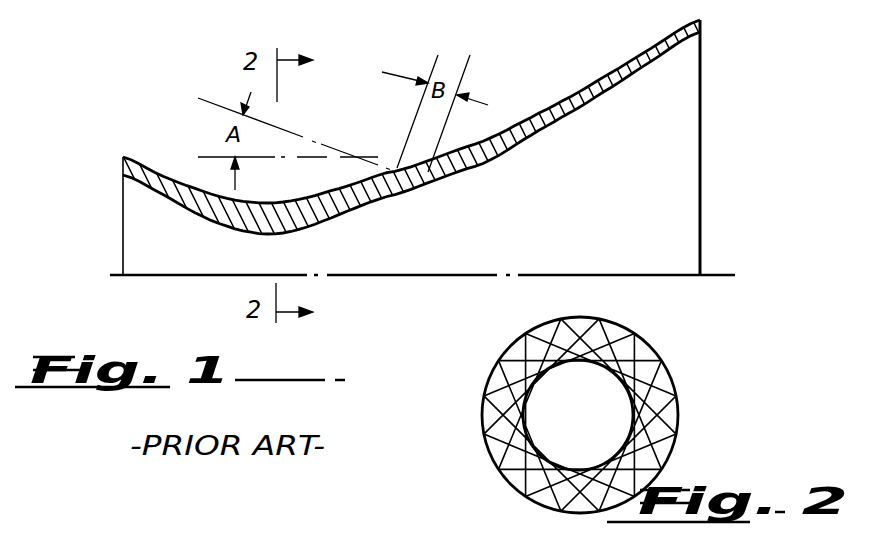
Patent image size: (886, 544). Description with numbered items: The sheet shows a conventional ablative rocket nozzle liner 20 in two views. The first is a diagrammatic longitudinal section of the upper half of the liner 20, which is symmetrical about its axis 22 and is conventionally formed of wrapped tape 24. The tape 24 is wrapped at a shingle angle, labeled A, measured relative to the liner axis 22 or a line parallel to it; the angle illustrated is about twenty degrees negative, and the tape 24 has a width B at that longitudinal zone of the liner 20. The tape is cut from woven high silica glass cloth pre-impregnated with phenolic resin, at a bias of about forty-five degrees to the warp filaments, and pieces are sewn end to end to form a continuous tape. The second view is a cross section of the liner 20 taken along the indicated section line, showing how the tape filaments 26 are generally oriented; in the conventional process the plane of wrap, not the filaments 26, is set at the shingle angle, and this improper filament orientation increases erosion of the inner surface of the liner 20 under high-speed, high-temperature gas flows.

In FIG. 1, the ablative rocket nozzle liner 20 is at (700, 123).
In FIG. 2, the ablative rocket nozzle liner 20 is at (495, 365).
In FIG. 1, the liner axis 22 is at (717, 275).
In FIG. 1, the wrapped tape 24 is at (592, 82).
In FIG. 2, the tape filaments 26 is at (648, 362).